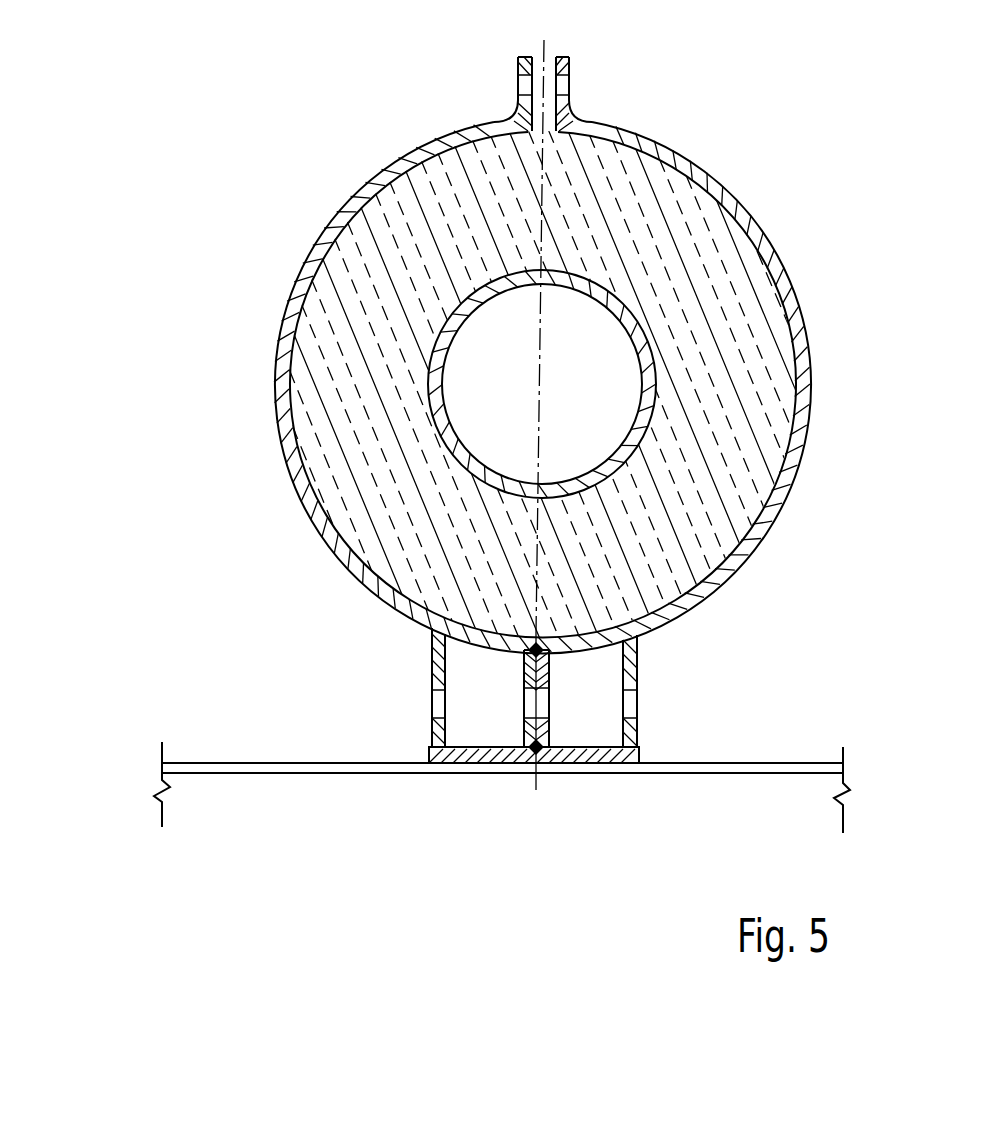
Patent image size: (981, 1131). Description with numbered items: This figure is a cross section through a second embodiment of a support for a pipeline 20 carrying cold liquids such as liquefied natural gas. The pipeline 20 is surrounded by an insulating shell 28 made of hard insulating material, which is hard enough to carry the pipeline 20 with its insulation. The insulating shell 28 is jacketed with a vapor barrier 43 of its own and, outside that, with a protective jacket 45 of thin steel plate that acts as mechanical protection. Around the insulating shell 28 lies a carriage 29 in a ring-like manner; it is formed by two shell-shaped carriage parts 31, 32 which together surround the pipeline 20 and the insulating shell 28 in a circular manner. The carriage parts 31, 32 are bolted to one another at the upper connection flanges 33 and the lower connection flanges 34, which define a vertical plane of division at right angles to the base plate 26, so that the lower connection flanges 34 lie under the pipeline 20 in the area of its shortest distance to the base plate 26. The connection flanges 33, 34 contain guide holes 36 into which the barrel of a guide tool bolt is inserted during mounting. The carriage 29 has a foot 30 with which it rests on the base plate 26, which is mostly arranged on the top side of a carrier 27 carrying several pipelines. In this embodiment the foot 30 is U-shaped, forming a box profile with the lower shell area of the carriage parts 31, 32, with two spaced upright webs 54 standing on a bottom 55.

The pipeline 20 is at (620, 457).
The base plate 26 is at (365, 768).
The carrier 27 is at (295, 785).
The insulating shell 28 is at (327, 293).
The carriage 29 is at (371, 157).
The foot 30 is at (397, 752).
The carriage part 31 is at (278, 327).
The carriage part 32 is at (748, 183).
The upper connection flange 33 is at (518, 60).
The lower connection flange 34 is at (432, 660).
The guide hole 36 is at (518, 88).
The vapor barrier 43 is at (792, 275).
The protective jacket 45 is at (802, 350).
The upright web 54 is at (549, 663).
The bottom 55 is at (584, 764).